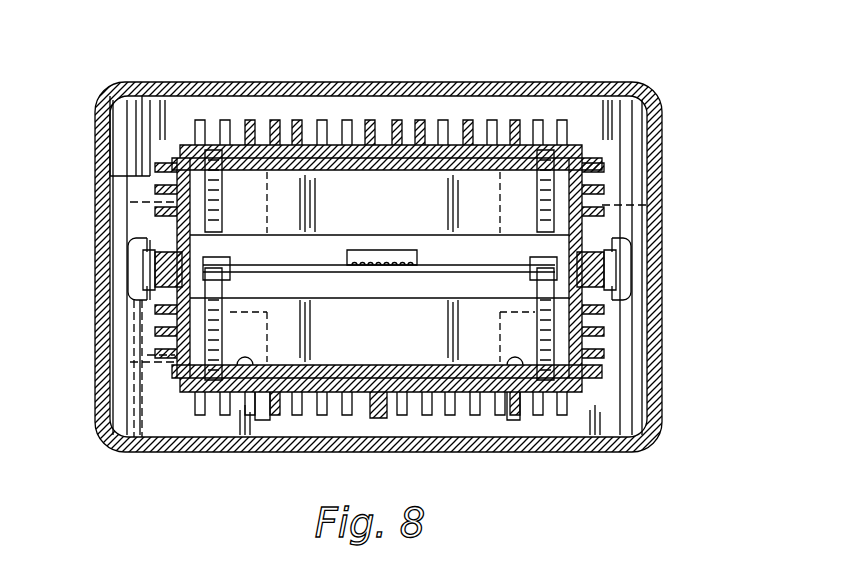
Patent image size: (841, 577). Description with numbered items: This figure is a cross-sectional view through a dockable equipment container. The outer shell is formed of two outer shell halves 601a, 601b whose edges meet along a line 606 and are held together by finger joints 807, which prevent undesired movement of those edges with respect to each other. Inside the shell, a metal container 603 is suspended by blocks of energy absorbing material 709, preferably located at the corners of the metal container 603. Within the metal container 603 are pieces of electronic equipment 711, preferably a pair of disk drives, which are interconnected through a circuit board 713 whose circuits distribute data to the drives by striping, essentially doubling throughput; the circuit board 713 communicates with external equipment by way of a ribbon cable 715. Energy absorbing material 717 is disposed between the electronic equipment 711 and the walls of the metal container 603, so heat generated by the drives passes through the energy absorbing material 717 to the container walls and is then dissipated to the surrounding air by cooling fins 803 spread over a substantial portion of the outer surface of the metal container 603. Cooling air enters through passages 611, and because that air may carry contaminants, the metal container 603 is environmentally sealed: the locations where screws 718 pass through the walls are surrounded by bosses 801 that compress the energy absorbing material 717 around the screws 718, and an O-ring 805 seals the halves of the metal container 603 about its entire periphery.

The blocks of energy absorbing material 709 is at (186, 82).
The bosses 801 is at (165, 165).
The outer shell half 601a is at (122, 175).
The outer shell half 601b is at (133, 352).
The passages 611 is at (402, 118).
The cooling fins 803 is at (272, 118).
The metal container 603 is at (460, 120).
The energy absorbing material 717 is at (514, 120).
The screws 718 is at (155, 205).
The line 606 is at (128, 272).
The finger joints 807 is at (155, 262).
The O-ring 805 is at (150, 282).
The electronic equipment 711 is at (352, 217).
The circuit board 713 is at (420, 273).
The ribbon cable 715 is at (417, 256).